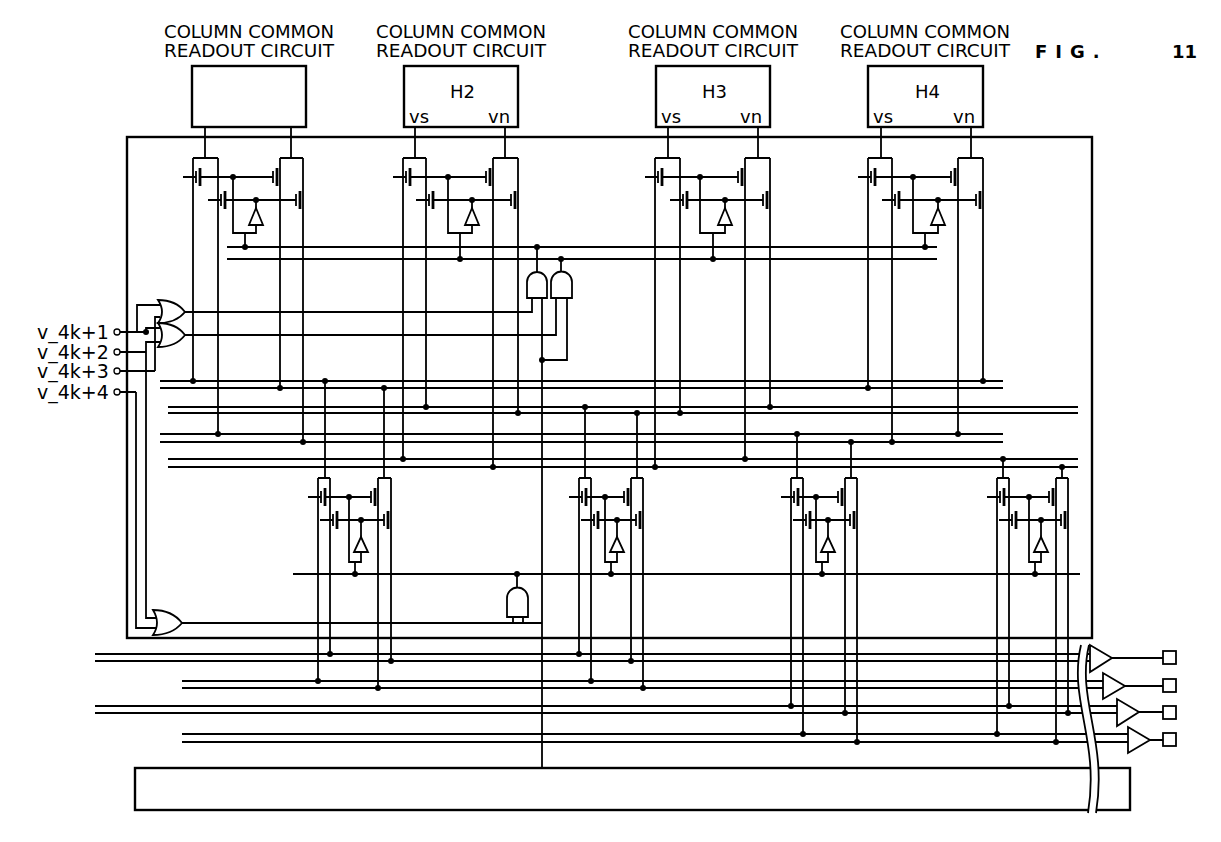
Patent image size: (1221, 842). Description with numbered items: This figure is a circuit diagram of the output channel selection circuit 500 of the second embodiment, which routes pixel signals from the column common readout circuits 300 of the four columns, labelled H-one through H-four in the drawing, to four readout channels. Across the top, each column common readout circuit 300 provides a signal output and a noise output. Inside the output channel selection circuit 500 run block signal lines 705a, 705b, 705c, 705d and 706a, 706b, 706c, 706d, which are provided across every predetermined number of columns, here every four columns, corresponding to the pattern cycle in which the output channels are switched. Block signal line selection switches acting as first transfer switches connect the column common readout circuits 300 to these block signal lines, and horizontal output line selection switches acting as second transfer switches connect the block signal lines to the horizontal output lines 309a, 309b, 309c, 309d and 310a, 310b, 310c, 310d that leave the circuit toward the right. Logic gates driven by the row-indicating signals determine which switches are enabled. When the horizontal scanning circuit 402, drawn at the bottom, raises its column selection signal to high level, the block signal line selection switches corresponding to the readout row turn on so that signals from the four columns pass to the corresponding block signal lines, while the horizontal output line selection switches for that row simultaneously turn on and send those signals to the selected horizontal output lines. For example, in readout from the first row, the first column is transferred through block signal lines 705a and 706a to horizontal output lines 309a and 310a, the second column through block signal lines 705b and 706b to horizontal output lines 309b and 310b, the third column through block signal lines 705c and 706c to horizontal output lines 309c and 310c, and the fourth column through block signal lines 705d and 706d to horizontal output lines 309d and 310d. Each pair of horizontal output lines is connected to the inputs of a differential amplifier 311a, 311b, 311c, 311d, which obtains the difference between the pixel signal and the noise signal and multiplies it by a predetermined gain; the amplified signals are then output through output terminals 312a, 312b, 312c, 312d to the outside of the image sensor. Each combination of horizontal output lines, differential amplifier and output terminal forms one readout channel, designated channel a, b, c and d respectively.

The column common readout circuit 300 is at (192, 97).
The output channel selection circuit 500 is at (127, 139).
The horizontal scanning circuit 402 is at (135, 780).
The block signal line 705a is at (1003, 381).
The block signal line 705b is at (1078, 407).
The block signal line 705c is at (1003, 434).
The block signal line 705d is at (1078, 459).
The block signal line 706a is at (1003, 388).
The block signal line 706b is at (1078, 413).
The block signal line 706c is at (1003, 442).
The block signal line 706d is at (1078, 467).
The horizontal output line 309a is at (95, 654).
The horizontal output line 309b is at (182, 681).
The horizontal output line 309c is at (95, 706).
The horizontal output line 309d is at (182, 734).
The horizontal output line 310a is at (95, 661).
The horizontal output line 310b is at (182, 688).
The horizontal output line 310c is at (95, 713).
The horizontal output line 310d is at (182, 742).
The differential amplifier 311a is at (1093, 647).
The differential amplifier 311b is at (1105, 675).
The differential amplifier 311c is at (1133, 727).
The differential amplifier 311d is at (1142, 748).
The output terminal 312a is at (1170, 651).
The output terminal 312b is at (1175, 679).
The output terminal 312c is at (1178, 712).
The output terminal 312d is at (1176, 746).